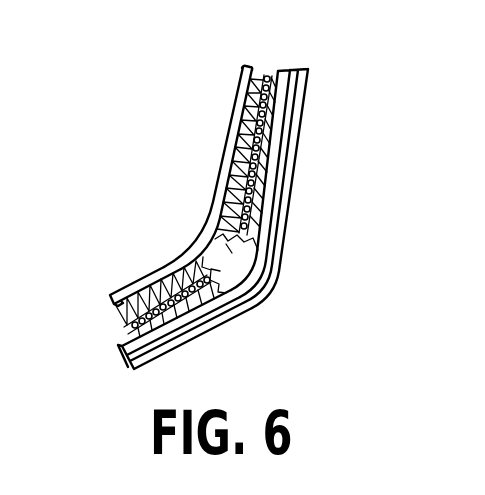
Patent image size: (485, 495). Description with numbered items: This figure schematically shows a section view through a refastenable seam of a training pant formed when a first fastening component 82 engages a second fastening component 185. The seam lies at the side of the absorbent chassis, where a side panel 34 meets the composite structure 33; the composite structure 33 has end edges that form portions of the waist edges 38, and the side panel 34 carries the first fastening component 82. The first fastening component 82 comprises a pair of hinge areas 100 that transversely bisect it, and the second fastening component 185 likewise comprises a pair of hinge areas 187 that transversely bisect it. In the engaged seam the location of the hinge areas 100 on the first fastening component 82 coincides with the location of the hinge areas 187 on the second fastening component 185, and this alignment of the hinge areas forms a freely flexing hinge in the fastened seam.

The waist edge 38 is at (299, 49).
The side panel 34 is at (131, 282).
The composite structure 33 is at (172, 343).
The first fastening component 82 is at (246, 128).
The second fastening component 185 is at (268, 150).
The hinge area 187 is at (250, 260).
The hinge area 100 is at (230, 243).